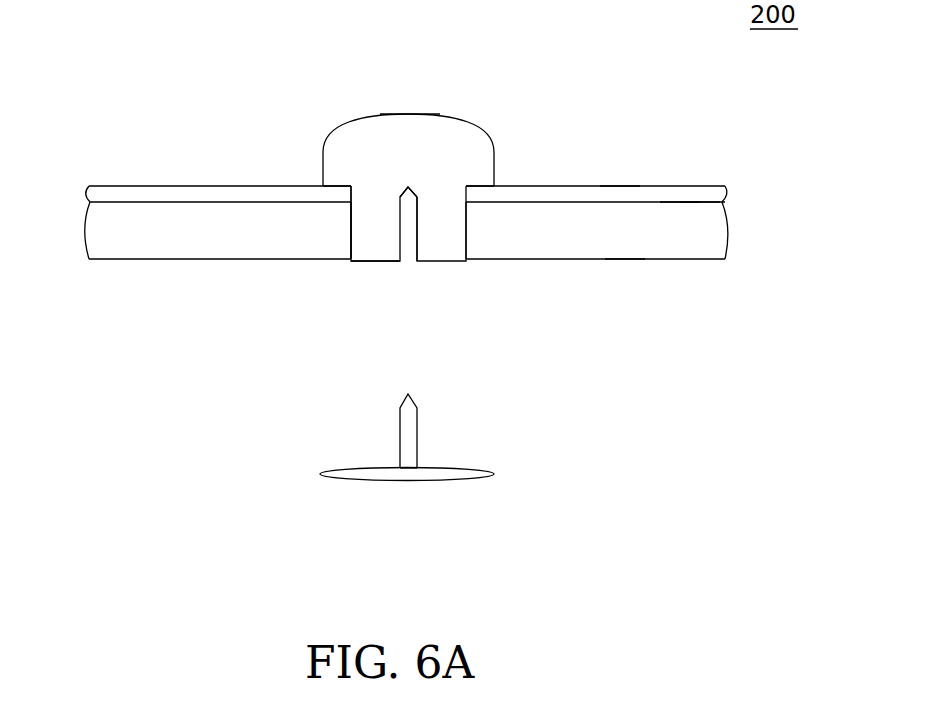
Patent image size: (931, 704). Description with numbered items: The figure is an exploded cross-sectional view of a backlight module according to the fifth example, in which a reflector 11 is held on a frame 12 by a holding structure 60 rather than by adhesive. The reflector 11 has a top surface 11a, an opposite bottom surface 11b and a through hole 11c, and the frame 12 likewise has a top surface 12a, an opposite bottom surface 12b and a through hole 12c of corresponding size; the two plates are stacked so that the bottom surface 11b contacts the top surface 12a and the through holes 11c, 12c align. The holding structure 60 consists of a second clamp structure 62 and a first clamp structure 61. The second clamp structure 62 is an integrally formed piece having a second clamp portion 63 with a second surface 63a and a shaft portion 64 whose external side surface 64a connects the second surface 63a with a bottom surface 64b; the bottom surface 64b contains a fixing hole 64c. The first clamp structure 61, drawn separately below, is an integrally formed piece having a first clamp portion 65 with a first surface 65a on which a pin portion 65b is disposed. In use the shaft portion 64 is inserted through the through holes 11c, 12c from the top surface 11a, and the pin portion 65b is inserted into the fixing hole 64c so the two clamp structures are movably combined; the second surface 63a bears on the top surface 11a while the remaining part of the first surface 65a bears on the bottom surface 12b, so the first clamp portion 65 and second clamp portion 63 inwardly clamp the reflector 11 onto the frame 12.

The reflector 11 is at (660, 202).
The top surface 11a is at (620, 190).
The bottom surface 11b is at (700, 197).
The through hole 11c is at (346, 195).
The frame 12 is at (706, 243).
The top surface 12a is at (680, 205).
The bottom surface 12b is at (625, 261).
The through hole 12c is at (346, 225).
The holding structure 60 is at (462, 188).
The second clamp structure 62 is at (437, 118).
The second clamp portion 63 is at (408, 128).
The second surface 63a is at (483, 185).
The shaft portion 64 is at (433, 235).
The external side surface 64a is at (466, 250).
The bottom surface 64b is at (376, 262).
The fixing hole 64c is at (400, 184).
The first clamp portion 65 is at (391, 474).
The first surface 65a is at (358, 468).
The pin portion 65b is at (410, 437).
The first clamp structure 61 is at (448, 481).